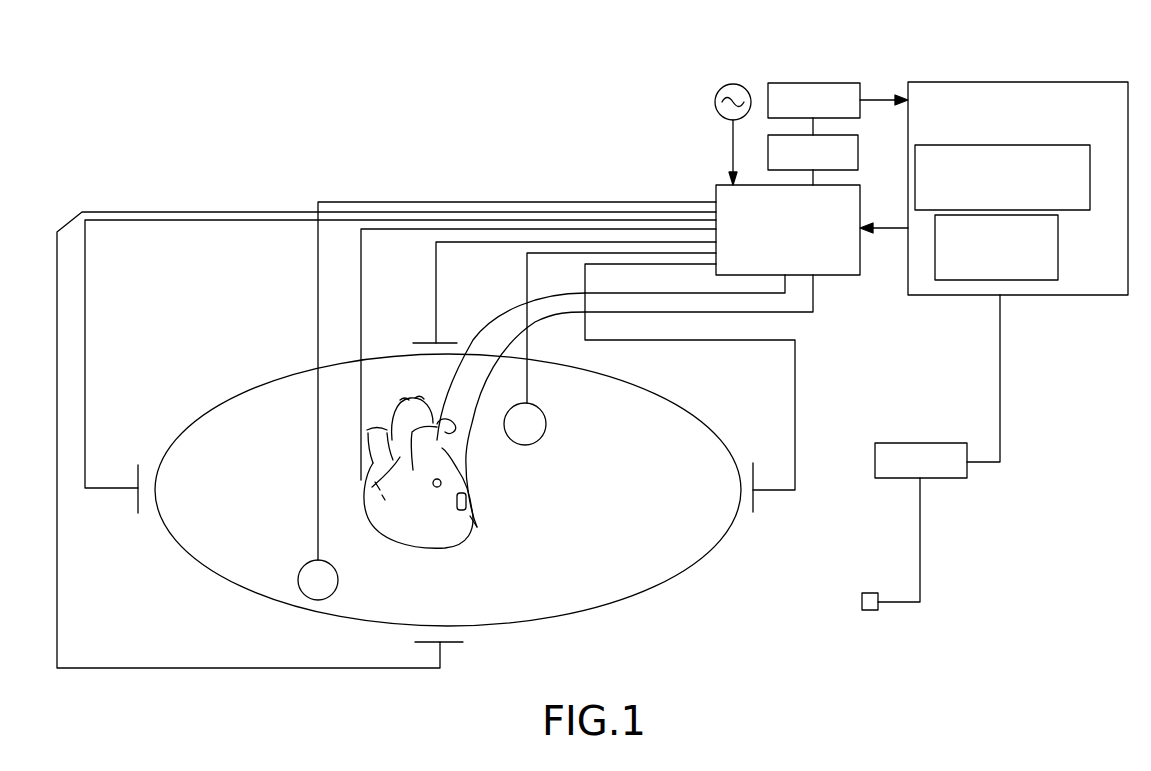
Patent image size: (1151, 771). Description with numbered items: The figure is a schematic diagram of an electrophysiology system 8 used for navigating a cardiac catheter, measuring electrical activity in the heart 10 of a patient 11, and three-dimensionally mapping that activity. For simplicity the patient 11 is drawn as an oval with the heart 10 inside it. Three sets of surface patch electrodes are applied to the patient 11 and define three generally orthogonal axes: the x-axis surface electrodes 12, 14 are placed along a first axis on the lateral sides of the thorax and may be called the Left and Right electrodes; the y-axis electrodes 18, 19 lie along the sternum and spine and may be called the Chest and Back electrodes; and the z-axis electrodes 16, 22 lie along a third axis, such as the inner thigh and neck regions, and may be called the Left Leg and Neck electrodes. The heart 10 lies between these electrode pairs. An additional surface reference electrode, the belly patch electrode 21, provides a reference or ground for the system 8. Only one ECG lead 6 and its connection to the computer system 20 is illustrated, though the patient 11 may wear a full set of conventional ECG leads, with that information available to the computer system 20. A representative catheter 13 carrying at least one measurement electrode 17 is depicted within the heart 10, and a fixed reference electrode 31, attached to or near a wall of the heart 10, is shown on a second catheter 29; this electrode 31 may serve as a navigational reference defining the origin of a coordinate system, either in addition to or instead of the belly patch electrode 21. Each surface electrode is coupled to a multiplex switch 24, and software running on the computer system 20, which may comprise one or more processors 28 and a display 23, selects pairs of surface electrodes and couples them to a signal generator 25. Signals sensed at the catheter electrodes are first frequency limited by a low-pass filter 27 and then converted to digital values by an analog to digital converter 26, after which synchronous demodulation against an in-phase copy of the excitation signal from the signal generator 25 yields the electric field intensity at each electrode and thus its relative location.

The lead 6 is at (862, 606).
The electrophysiology system 8 is at (137, 142).
The heart 10 is at (468, 499).
The patient 11 is at (663, 394).
The x-axis surface electrode 12 is at (430, 342).
The catheter 13 is at (813, 290).
The x-axis surface electrode 14 is at (445, 648).
The z-axis surface electrode 16 is at (529, 382).
The catheter electrode 17 is at (477, 527).
The y-axis surface electrode 18 is at (136, 504).
The y-axis surface electrode 19 is at (755, 500).
The computer system 20 is at (1110, 283).
The belly patch electrode 21 is at (318, 498).
The z-axis surface electrode 22 is at (361, 278).
The display 23 is at (984, 273).
The multiplex switch 24 is at (775, 253).
The signal generator 25 is at (717, 90).
The analog to digital converter 26 is at (830, 83).
The low-pass filter 27 is at (858, 143).
The processor 28 is at (990, 203).
The second catheter 29 is at (455, 370).
The fixed reference electrode 31 is at (435, 487).